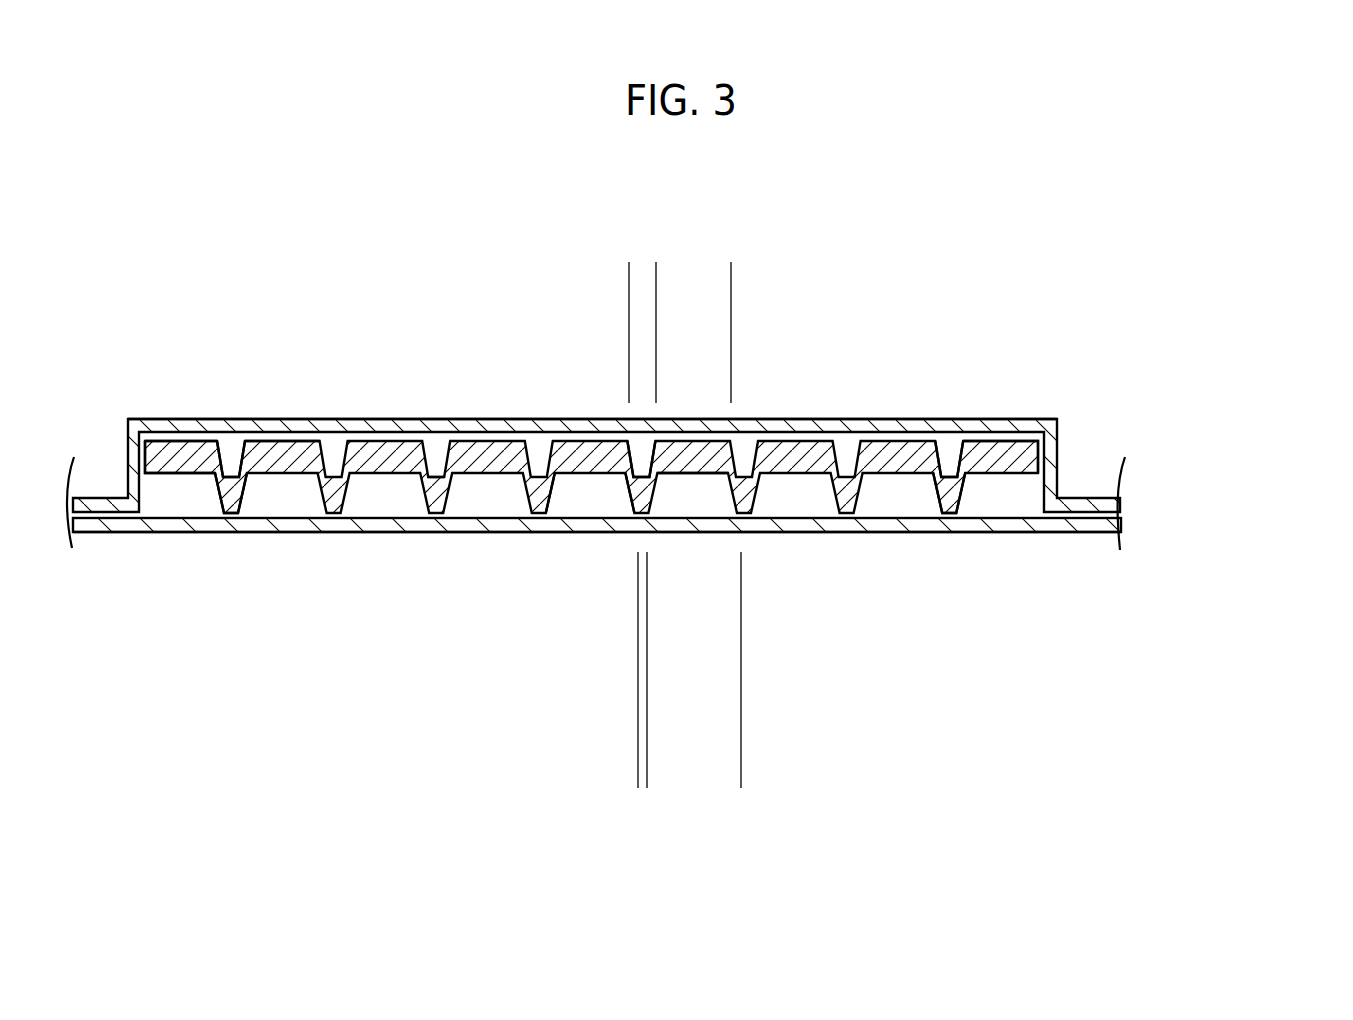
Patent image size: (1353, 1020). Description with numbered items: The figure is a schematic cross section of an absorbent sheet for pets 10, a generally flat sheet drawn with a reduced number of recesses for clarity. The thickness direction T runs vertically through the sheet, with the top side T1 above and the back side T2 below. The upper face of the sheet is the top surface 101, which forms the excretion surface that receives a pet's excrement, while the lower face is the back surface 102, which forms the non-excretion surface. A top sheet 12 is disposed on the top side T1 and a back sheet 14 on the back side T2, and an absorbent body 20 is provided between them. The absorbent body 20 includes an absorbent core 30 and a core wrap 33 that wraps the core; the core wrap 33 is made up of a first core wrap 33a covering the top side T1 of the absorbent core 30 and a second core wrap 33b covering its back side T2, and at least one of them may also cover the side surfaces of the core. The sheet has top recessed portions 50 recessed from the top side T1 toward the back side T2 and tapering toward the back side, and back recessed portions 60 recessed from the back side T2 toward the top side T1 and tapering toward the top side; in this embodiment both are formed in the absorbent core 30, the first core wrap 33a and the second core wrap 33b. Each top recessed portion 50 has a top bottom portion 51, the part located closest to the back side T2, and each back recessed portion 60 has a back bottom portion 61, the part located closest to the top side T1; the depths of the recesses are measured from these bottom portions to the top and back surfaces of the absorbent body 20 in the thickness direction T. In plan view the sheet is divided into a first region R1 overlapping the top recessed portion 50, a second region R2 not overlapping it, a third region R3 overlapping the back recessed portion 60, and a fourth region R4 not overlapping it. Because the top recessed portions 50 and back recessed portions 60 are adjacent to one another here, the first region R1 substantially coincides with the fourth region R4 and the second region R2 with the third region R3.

The absorbent sheet for pets 10 is at (597, 491).
The top sheet 12 is at (596, 418).
The back sheet 14 is at (597, 588).
The top surface 101 is at (862, 420).
The back surface 102 is at (898, 533).
The absorbent body 20 is at (1019, 480).
The absorbent core 30 is at (487, 468).
The core wrap 33 is at (620, 495).
The first core wrap 33a is at (493, 477).
The second core wrap 33b is at (990, 474).
The top recessed portion 50 is at (642, 462).
The top bottom portion 51 is at (442, 477).
The back recessed portion 60 is at (575, 502).
The back bottom portion 61 is at (690, 474).
The first region R1 is at (629, 268).
The second region R2 is at (656, 268).
The third region R3 is at (647, 775).
The fourth region R4 is at (575, 775).
The thickness direction T is at (1315, 453).
The top side T1 is at (1222, 412).
The back side T2 is at (1222, 523).